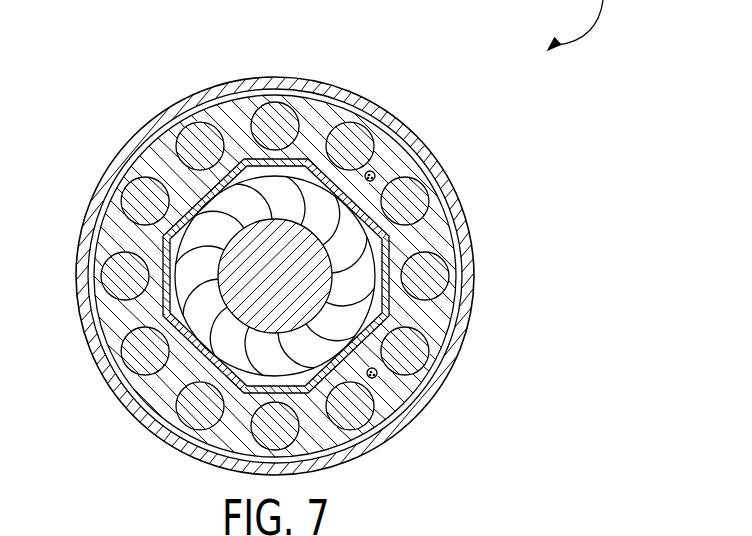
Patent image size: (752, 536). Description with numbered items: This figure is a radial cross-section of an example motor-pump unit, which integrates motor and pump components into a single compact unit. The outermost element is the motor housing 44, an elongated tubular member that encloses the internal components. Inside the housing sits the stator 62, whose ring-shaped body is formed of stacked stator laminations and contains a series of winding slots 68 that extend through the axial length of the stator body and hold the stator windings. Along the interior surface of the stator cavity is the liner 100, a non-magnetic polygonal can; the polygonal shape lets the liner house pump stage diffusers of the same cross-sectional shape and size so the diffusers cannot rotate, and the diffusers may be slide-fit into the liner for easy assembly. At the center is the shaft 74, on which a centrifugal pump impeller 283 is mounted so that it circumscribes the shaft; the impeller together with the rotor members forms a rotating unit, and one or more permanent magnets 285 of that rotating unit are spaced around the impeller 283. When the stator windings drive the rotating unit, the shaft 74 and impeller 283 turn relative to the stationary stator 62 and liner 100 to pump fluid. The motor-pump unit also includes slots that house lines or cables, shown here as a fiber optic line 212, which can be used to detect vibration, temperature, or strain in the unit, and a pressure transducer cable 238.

The motor housing 44 is at (336, 79).
The stator 62 is at (237, 124).
The winding slots 68 is at (431, 191).
The liner 100 is at (400, 244).
The permanent magnets 285 is at (161, 242).
The pump impeller 283 is at (190, 267).
The shaft 74 is at (216, 292).
The fiber optic line 212 is at (376, 168).
The pressure transducer cable 238 is at (378, 380).